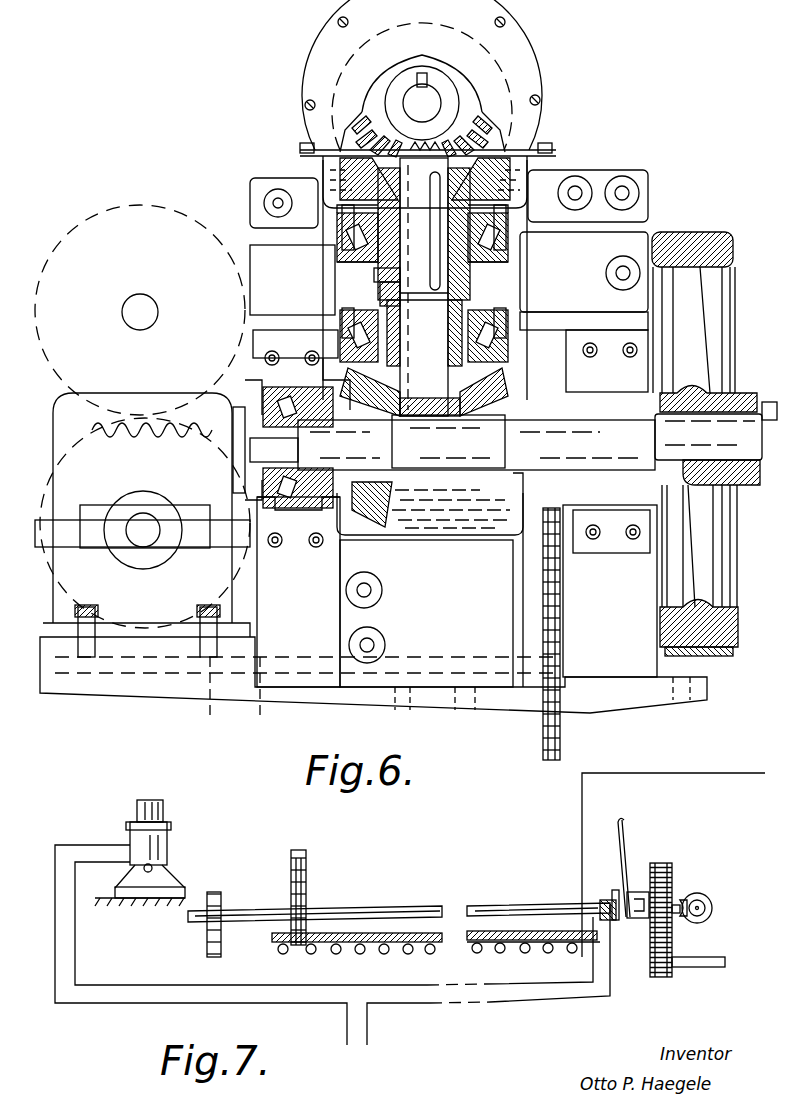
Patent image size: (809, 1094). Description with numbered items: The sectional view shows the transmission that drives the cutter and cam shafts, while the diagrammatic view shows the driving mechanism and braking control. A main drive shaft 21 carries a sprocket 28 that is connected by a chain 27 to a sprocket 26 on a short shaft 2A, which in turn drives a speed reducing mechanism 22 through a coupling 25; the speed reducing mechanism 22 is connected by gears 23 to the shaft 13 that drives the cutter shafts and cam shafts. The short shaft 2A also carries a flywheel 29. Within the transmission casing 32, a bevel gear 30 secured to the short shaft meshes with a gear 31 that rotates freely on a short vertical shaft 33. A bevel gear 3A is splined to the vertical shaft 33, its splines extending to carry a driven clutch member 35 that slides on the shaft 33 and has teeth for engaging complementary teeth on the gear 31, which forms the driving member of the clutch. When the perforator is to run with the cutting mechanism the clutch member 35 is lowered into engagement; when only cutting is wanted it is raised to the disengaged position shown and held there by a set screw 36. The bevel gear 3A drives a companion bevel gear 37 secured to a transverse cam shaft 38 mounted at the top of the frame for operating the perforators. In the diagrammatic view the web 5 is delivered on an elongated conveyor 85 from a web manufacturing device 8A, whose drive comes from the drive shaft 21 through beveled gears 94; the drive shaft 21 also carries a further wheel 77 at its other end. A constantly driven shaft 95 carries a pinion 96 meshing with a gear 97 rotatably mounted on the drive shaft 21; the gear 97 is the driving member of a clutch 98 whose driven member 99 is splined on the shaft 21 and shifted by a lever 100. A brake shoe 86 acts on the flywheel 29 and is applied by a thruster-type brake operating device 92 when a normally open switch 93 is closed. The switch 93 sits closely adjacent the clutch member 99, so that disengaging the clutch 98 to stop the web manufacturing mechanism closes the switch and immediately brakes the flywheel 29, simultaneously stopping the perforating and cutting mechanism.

In FIG. 6, the shaft 13 is at (140, 296).
In FIG. 6, the speed reducing mechanism 22 is at (66, 436).
In FIG. 6, the gears 23 is at (56, 378).
In FIG. 6, the coupling 25 is at (240, 400).
In FIG. 6, the transverse cam shaft 38 is at (432, 101).
In FIG. 6, the companion bevel gear 37 is at (476, 146).
In FIG. 6, the gear housing cover 3A is at (542, 158).
In FIG. 6, the transmission casing 32 is at (552, 296).
In FIG. 6, the set screw 36 is at (375, 272).
In FIG. 6, the driven clutch member 35 is at (382, 290).
In FIG. 6, the short vertical shaft 33 is at (440, 330).
In FIG. 6, the gear 31 is at (465, 402).
In FIG. 6, the gear 30 is at (392, 470).
In FIG. 6, the lower housing 2A is at (472, 448).
In FIG. 6, the sprocket 26 is at (522, 545).
In FIG. 6, the chain 27 is at (541, 744).
In FIG. 7, the chain 27 is at (304, 865).
In FIG. 6, the flywheel 29 is at (733, 577).
In FIG. 6, the brake shoe 86 is at (722, 655).
In FIG. 7, the wiring circuit 8A is at (696, 773).
In FIG. 7, the brake operating device 92 is at (170, 850).
In FIG. 7, the sprocket 77 is at (207, 952).
In FIG. 7, the sprocket 28 is at (306, 902).
In FIG. 7, the web 5 is at (376, 934).
In FIG. 7, the main drive shaft 21 is at (412, 908).
In FIG. 7, the normally open switch 93 is at (598, 918).
In FIG. 7, the elongated conveyor 85 is at (522, 950).
In FIG. 7, the driven clutch member 99 is at (613, 892).
In FIG. 7, the lever 100 is at (622, 822).
In FIG. 7, the clutch 98 is at (640, 890).
In FIG. 7, the pinion 96 is at (665, 980).
In FIG. 7, the gear 97 is at (674, 936).
In FIG. 7, the beveled gears 94 is at (693, 896).
In FIG. 7, the shaft 95 is at (708, 968).